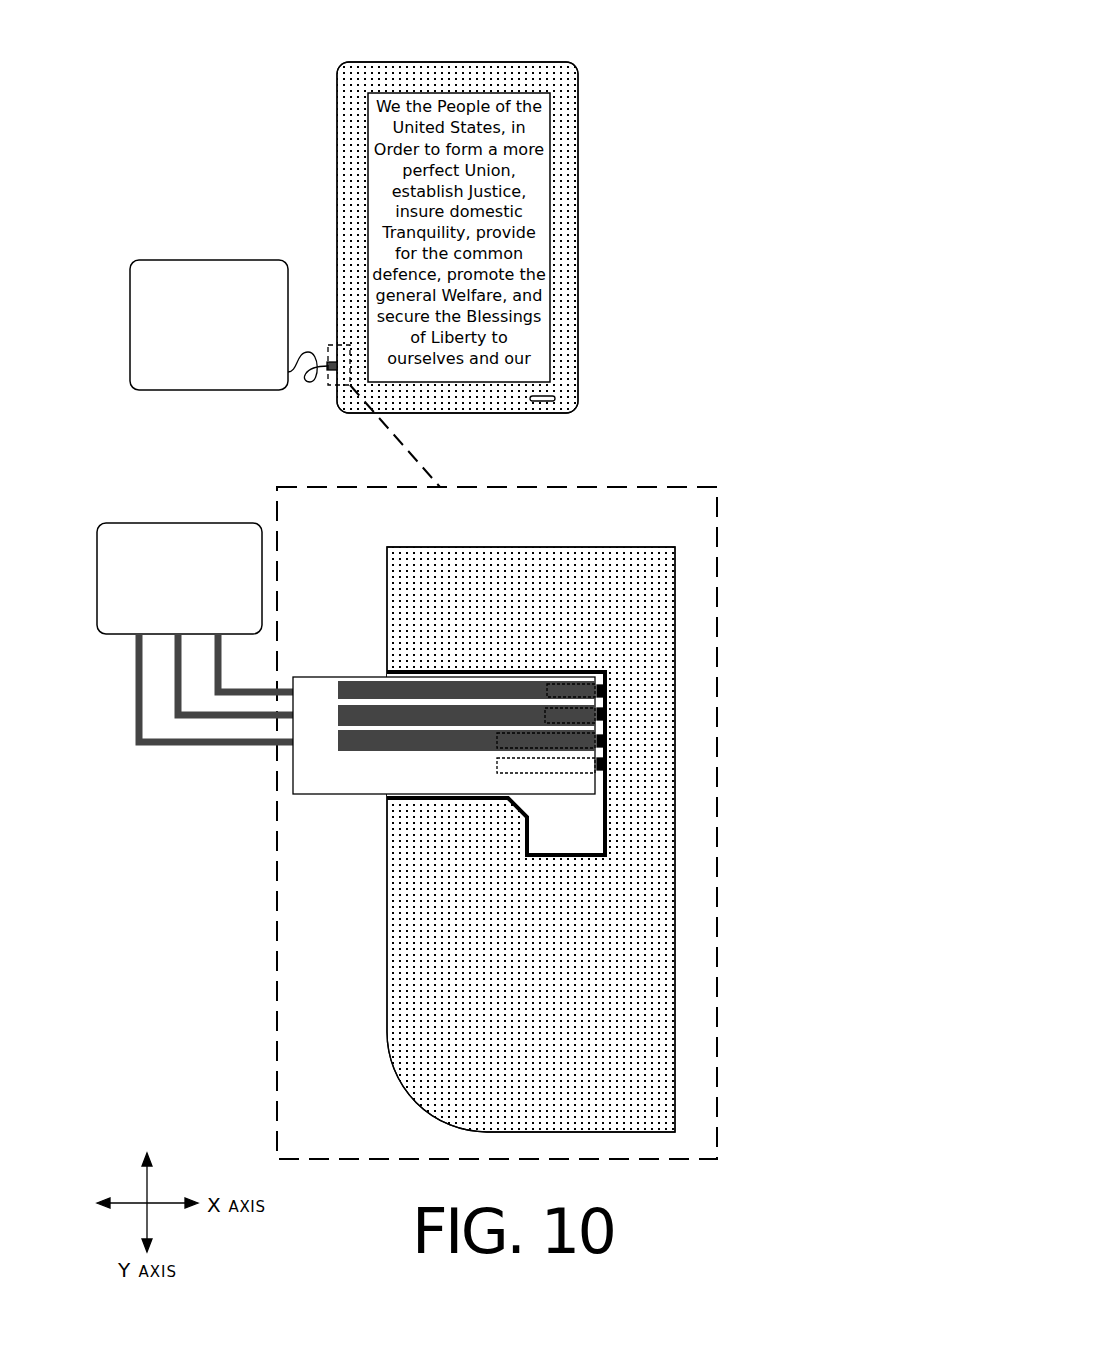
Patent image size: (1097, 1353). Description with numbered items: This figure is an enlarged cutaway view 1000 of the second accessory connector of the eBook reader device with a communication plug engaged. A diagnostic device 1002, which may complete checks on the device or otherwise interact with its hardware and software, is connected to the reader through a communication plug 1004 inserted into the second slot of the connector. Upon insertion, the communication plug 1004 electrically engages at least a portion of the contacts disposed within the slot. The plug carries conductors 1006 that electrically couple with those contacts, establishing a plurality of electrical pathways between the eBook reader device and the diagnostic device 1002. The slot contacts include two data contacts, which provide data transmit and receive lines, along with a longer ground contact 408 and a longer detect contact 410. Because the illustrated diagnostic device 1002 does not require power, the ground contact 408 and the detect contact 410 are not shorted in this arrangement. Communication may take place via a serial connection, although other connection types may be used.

The enlarged cutaway view 1000 is at (838, 58).
The diagnostic device 1002 is at (156, 613).
The communication plug 1004 is at (338, 783).
The conductors 1006 is at (453, 740).
The ground contact 408 is at (607, 740).
The detect contact 410 is at (607, 764).